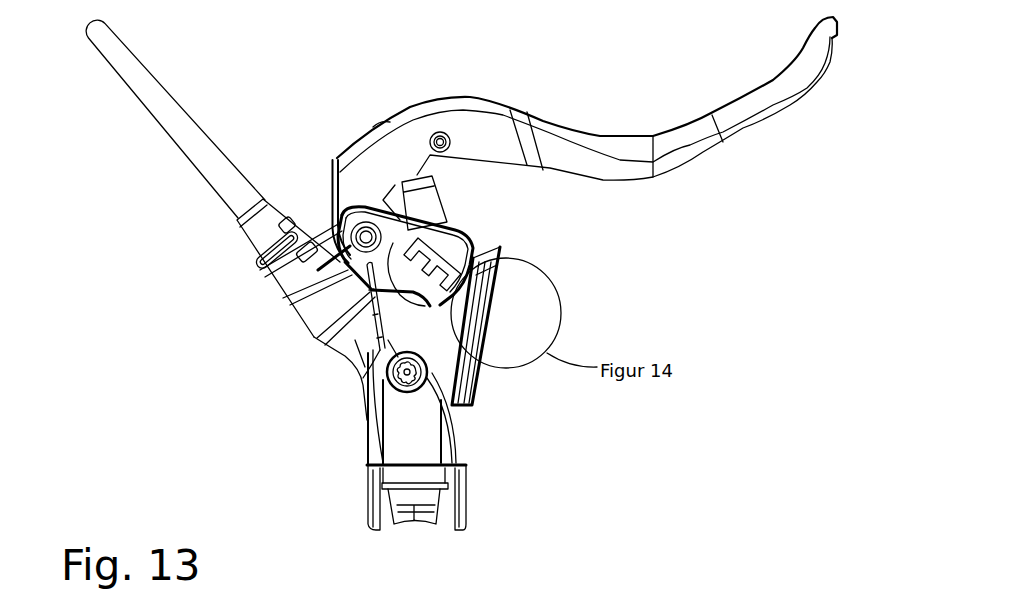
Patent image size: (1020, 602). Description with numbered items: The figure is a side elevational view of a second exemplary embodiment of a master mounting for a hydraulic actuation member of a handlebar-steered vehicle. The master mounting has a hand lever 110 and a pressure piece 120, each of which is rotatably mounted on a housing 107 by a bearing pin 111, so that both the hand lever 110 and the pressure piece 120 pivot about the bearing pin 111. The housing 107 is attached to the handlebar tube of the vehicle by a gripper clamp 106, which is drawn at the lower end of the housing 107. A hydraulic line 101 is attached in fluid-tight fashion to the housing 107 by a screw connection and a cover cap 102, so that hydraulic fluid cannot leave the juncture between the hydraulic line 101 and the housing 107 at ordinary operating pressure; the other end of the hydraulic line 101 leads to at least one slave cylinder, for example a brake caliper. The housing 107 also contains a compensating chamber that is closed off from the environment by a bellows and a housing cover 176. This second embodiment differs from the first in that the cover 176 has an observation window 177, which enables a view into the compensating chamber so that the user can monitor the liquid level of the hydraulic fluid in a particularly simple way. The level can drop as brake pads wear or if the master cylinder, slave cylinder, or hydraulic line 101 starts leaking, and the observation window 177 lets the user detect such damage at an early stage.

The hydraulic line 101 is at (148, 88).
The cover cap 102 is at (250, 230).
The gripper clamp 106 is at (462, 508).
The housing 107 is at (317, 337).
The hand lever 110 is at (537, 115).
The bearing pin 111 is at (328, 215).
The pressure piece 120 is at (435, 208).
The housing cover 176 is at (493, 248).
The observation window 177 is at (482, 312).